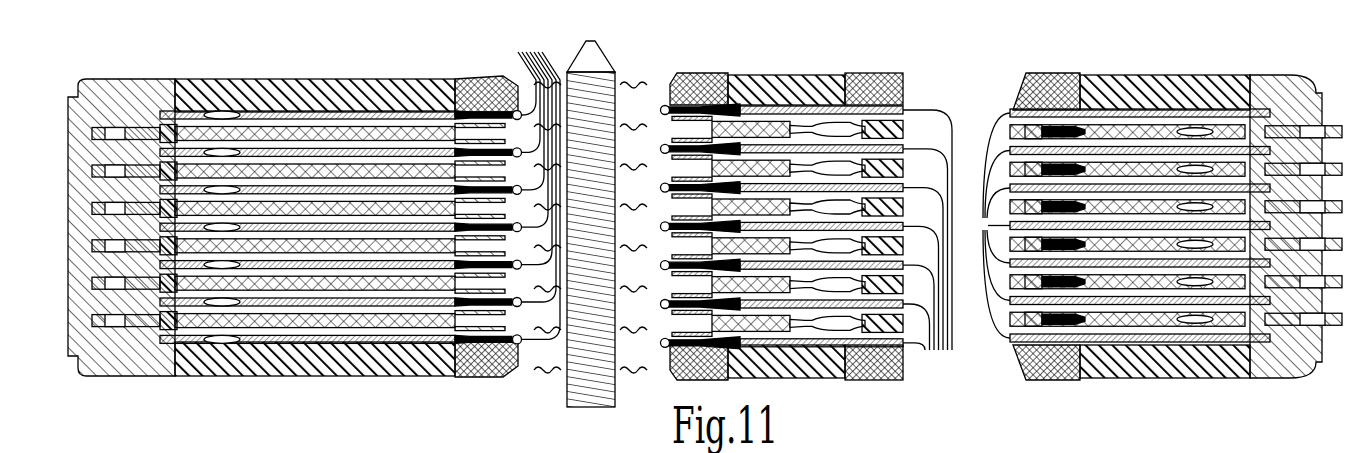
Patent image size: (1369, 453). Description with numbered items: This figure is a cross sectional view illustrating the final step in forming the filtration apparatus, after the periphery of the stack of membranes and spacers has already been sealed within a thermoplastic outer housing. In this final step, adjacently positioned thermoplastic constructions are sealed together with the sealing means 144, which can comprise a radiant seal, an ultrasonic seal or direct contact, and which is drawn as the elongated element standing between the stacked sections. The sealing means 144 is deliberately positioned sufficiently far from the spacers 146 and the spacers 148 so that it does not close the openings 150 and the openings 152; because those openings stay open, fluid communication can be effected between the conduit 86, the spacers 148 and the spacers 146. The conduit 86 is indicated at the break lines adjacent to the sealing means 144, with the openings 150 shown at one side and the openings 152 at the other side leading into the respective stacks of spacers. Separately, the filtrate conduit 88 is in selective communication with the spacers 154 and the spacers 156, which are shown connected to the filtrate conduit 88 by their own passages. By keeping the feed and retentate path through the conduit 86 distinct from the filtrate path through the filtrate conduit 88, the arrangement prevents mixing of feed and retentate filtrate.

The spacers 148 is at (322, 320).
The openings 150 is at (529, 178).
The sealing means 144 is at (590, 63).
The conduit 86 is at (626, 82).
The openings 152 is at (692, 75).
The spacers 146 is at (773, 325).
The filtrate conduit 88 is at (955, 102).
The spacers 154 is at (932, 347).
The spacers 156 is at (1012, 222).